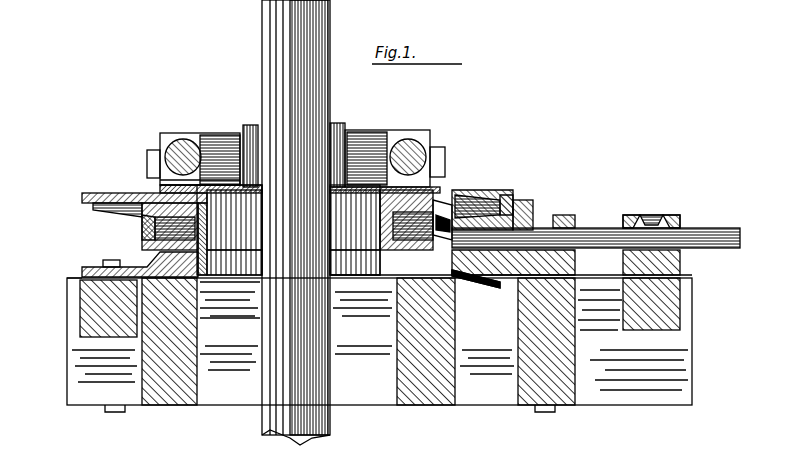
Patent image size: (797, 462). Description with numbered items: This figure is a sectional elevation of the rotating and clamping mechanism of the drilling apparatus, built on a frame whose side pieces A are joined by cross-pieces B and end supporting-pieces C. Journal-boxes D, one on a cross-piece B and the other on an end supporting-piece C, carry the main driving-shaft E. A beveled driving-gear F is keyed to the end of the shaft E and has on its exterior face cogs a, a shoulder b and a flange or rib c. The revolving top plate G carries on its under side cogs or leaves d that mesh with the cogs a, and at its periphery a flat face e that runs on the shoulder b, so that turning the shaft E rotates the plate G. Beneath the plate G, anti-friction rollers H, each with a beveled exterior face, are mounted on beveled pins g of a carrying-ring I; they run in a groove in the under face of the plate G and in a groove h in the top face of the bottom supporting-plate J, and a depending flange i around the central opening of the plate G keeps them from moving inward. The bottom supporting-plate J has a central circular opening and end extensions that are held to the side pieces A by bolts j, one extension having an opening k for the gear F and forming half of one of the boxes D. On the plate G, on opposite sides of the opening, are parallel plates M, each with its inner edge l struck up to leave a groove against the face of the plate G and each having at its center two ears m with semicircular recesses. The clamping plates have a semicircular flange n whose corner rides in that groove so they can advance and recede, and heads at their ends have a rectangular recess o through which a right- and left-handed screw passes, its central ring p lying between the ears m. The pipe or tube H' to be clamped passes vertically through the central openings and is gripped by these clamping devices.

The side pieces of the frame A is at (262, 330).
The cross-pieces B is at (368, 341).
The end supporting-pieces C is at (356, 315).
The journal-boxes D is at (568, 215).
The main driving-shaft E is at (690, 228).
The beveled driving-gear F is at (520, 210).
The revolving top plate G is at (120, 193).
The anti-friction rollers H is at (309, 147).
The pipe or tube to be clamped H' is at (296, 222).
The carrying-ring I is at (148, 222).
The bottom supporting-plate J is at (250, 290).
The plates M is at (160, 186).
The cogs a is at (475, 283).
The shoulder b is at (507, 183).
The flange or rib c is at (372, 233).
The cogs or leaves d is at (155, 228).
The flat face e is at (93, 205).
The beveled pins g is at (150, 240).
The groove h is at (103, 263).
The depending flange i is at (233, 233).
The bolts j is at (90, 265).
The opening k is at (67, 278).
The inner edge l is at (222, 140).
The ears m is at (150, 150).
The semicircular flange n is at (250, 125).
The rectangular recess o is at (172, 142).
The ring p is at (192, 133).